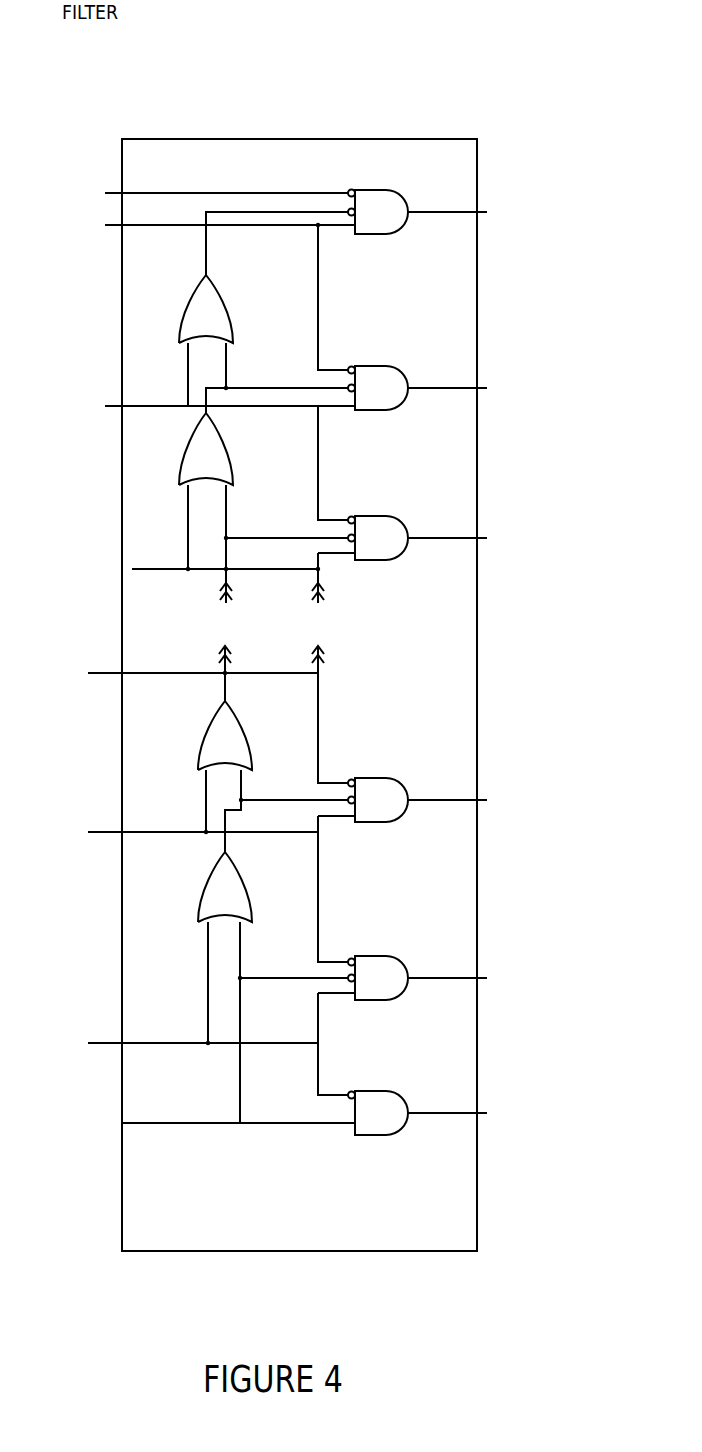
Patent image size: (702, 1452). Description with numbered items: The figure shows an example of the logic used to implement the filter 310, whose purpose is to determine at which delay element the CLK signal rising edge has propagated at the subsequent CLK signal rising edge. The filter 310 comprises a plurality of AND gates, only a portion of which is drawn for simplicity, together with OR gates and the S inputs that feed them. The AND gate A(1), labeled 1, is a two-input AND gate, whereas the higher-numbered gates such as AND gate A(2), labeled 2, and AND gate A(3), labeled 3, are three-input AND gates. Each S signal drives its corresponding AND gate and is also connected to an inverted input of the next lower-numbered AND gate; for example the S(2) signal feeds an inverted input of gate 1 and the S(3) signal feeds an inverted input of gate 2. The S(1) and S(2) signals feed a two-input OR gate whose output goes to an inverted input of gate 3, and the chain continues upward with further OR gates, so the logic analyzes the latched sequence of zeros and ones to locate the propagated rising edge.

The filter 310 is at (352, 139).
The AND gate A 1 is at (417, 1113).
The AND gate A 2 is at (417, 978).
The AND gate A 3 is at (417, 800).